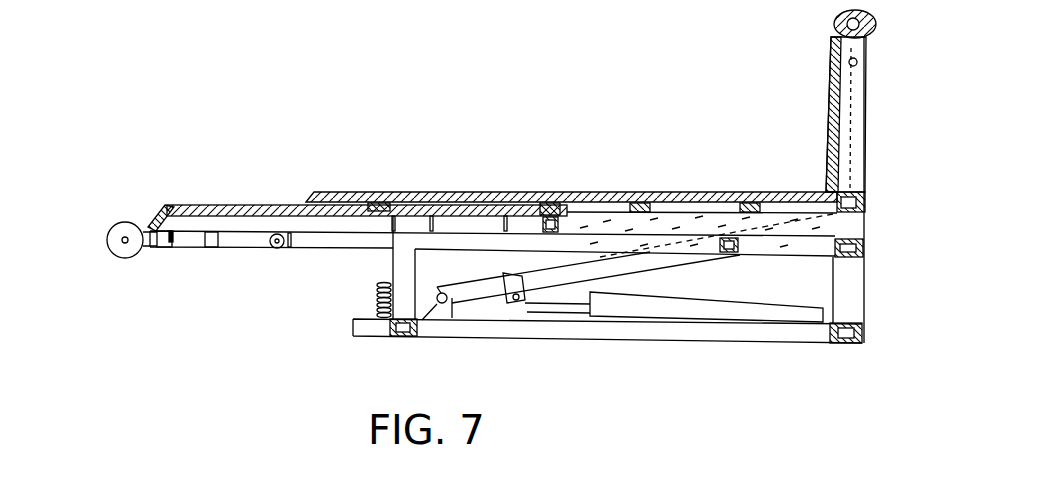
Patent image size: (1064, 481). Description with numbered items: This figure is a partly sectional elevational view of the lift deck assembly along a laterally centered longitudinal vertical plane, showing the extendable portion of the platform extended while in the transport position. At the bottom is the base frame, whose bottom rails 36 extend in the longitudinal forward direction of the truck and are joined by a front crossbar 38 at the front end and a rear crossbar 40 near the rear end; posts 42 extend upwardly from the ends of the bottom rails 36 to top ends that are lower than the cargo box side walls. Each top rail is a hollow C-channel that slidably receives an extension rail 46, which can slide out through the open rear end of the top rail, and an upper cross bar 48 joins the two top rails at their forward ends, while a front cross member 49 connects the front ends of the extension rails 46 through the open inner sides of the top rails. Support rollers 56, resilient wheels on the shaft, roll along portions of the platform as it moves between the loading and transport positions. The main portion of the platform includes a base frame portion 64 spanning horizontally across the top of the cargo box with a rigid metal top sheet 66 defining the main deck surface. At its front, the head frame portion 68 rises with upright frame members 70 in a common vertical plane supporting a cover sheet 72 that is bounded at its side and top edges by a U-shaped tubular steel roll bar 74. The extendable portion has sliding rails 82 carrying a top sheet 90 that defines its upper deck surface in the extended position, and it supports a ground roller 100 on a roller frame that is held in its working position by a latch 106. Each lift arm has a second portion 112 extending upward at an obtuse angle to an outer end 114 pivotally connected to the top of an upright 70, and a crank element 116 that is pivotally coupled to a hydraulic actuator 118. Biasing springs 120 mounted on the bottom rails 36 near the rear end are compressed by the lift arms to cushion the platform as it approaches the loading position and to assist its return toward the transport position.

The bottom rail 36 is at (738, 345).
The front crossbar 38 is at (845, 347).
The rear crossbar 40 is at (398, 336).
The post 42 is at (868, 298).
The extension rail 46 is at (330, 250).
The upper cross bar 48 is at (866, 248).
The front cross member 49 is at (735, 252).
The support roller 56 is at (273, 253).
The base frame portion 64 is at (952, 207).
The top sheet 66 is at (529, 178).
The head frame portion 68 is at (904, 101).
The upright frame member 70 is at (867, 183).
The cover sheet 72 is at (824, 147).
The roll bar 74 is at (876, 27).
The sliding rail 82 is at (238, 233).
The top sheet 90 is at (236, 193).
The ground roller 100 is at (110, 248).
The latch 106 is at (173, 240).
The second portion of lift arm 112 is at (850, 130).
The outer end 114 is at (882, 64).
The crank element 116 is at (508, 278).
The hydraulic actuator 118 is at (693, 312).
The biasing spring 120 is at (357, 301).